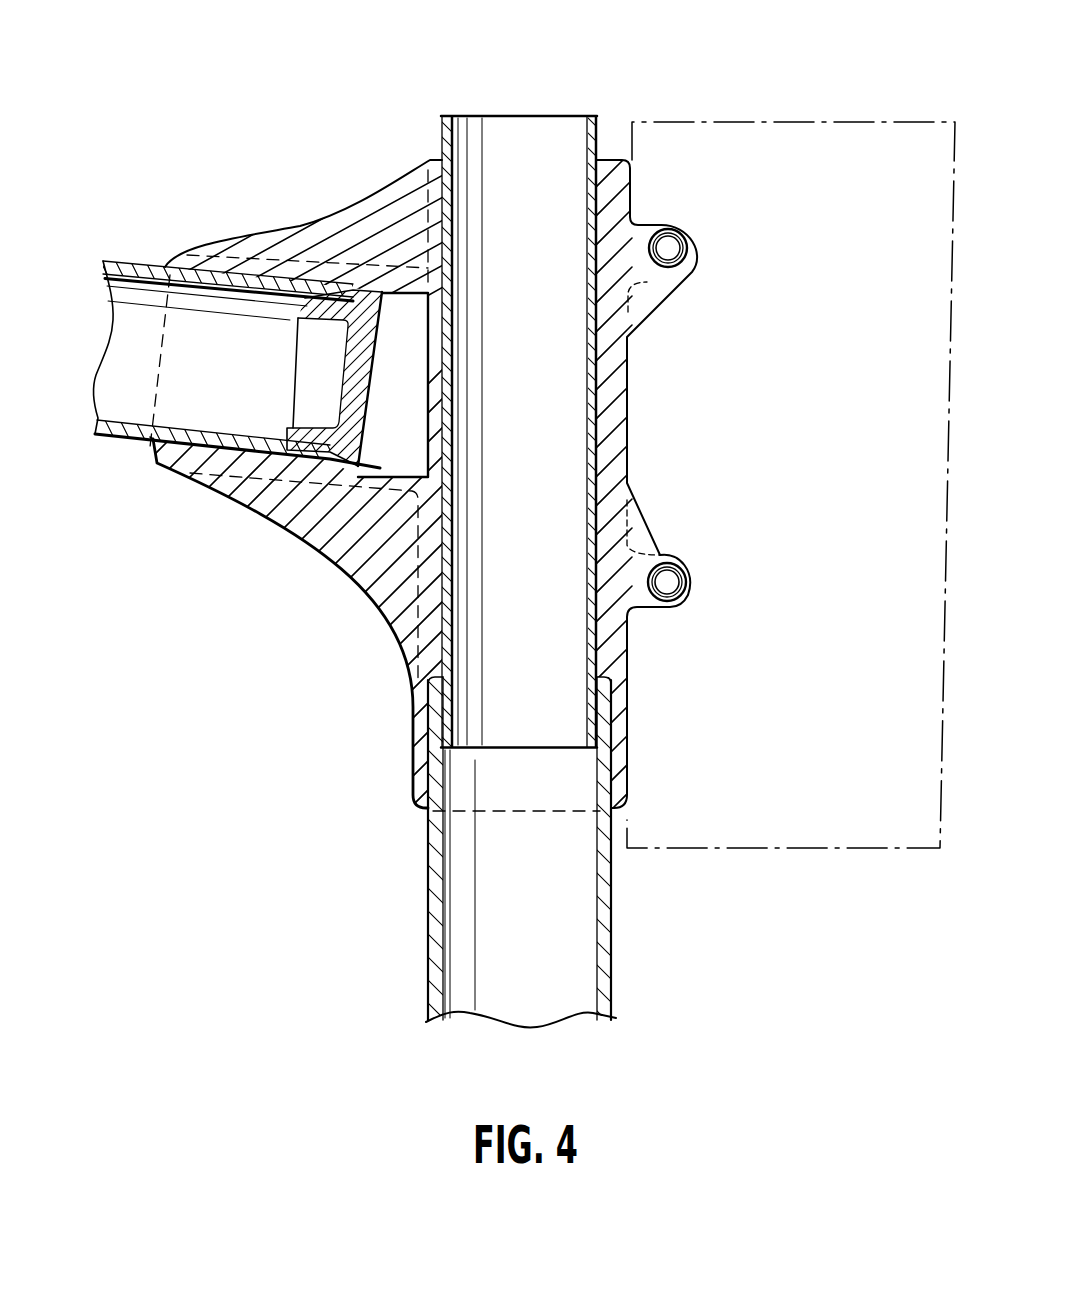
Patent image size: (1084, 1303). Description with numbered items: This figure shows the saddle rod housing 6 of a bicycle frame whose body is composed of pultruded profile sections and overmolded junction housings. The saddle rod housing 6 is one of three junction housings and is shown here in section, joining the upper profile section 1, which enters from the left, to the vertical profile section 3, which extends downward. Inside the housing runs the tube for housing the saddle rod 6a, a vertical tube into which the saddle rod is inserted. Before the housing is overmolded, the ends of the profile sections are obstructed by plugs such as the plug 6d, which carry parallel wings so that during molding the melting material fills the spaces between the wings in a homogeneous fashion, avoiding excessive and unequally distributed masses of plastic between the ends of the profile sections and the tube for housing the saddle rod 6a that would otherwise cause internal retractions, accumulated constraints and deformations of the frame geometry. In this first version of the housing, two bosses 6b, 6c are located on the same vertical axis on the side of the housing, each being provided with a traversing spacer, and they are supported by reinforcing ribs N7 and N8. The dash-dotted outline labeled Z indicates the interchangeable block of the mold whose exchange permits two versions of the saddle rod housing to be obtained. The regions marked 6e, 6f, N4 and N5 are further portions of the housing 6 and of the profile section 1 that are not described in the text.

The upper profile section 1 is at (132, 260).
The vertical profile section 3 is at (613, 933).
The saddle rod housing 6 is at (611, 426).
The tube for housing the saddle rod 6a is at (599, 117).
The boss 6b is at (683, 233).
The boss 6c is at (690, 566).
The plug 6d is at (313, 527).
The tube end 6e is at (630, 708).
The skirt bore 6f is at (603, 768).
The upper wall portion N4 is at (326, 240).
The lower wall portion N5 is at (293, 497).
The reinforcing rib N7 is at (646, 303).
The reinforcing rib N8 is at (634, 530).
The interchangeable block Z is at (791, 485).